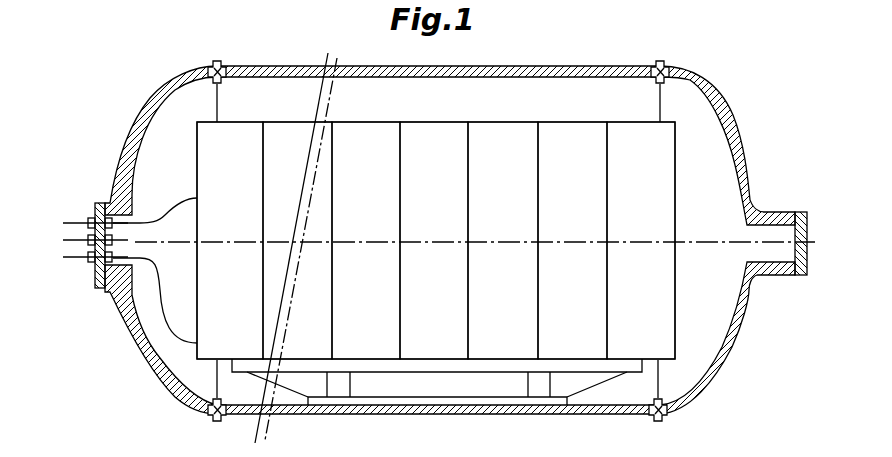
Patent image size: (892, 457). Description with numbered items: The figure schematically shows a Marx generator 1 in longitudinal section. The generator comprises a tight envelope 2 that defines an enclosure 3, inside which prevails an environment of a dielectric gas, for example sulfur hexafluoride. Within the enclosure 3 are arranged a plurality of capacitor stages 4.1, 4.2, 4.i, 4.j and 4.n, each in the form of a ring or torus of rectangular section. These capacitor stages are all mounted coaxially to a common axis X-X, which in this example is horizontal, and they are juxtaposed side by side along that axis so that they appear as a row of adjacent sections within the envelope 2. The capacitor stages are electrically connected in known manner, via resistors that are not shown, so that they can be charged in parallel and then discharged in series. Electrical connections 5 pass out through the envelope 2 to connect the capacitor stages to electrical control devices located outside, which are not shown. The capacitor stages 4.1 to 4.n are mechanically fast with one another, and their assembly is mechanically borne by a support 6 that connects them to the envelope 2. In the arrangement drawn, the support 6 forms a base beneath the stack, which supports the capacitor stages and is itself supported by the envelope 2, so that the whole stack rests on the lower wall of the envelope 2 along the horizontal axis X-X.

The Marx generator 1 is at (322, 418).
The tight envelope 2 is at (594, 68).
The enclosure 3 is at (436, 225).
The capacitor stage 4.1 is at (238, 133).
The capacitor stage 4.2 is at (290, 133).
The capacitor stage 4.i is at (372, 133).
The capacitor stage 4.j is at (447, 133).
The capacitor stage 4.n is at (627, 142).
The electrical connections 5 is at (62, 212).
The support 6 is at (472, 388).